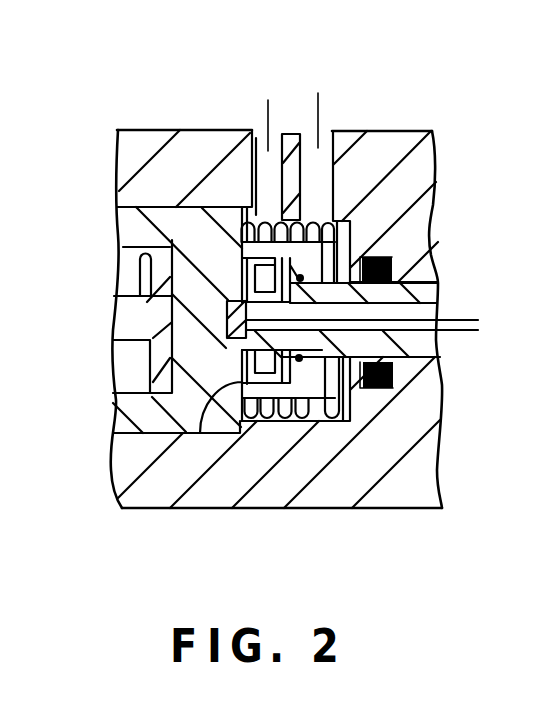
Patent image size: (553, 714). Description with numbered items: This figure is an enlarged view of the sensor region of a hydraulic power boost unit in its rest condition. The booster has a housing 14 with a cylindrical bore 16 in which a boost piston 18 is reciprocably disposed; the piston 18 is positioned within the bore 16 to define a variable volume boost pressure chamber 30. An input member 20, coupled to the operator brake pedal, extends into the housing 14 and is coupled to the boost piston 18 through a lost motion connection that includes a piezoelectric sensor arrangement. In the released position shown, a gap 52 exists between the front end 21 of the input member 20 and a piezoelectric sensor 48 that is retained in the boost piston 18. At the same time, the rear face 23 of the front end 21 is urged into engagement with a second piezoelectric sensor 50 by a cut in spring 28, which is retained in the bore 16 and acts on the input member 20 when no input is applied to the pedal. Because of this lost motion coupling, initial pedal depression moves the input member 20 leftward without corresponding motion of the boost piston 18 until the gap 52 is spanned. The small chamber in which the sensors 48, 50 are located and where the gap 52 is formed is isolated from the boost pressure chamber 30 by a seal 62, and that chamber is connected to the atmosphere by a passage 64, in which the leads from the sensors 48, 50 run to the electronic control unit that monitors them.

The housing 14 is at (430, 456).
The cylindrical bore 16 is at (144, 432).
The boost piston 18 is at (134, 231).
The input member 20 is at (441, 286).
The front end 21 is at (150, 504).
The rear face 23 is at (300, 276).
The cut in spring 28 is at (262, 420).
The boost pressure chamber 30 is at (327, 402).
The piezoelectric sensor 48 is at (227, 319).
The piezoelectric sensor 50 is at (300, 400).
The gap 52 is at (242, 352).
The seal 62 is at (285, 258).
The passage 64 is at (425, 356).